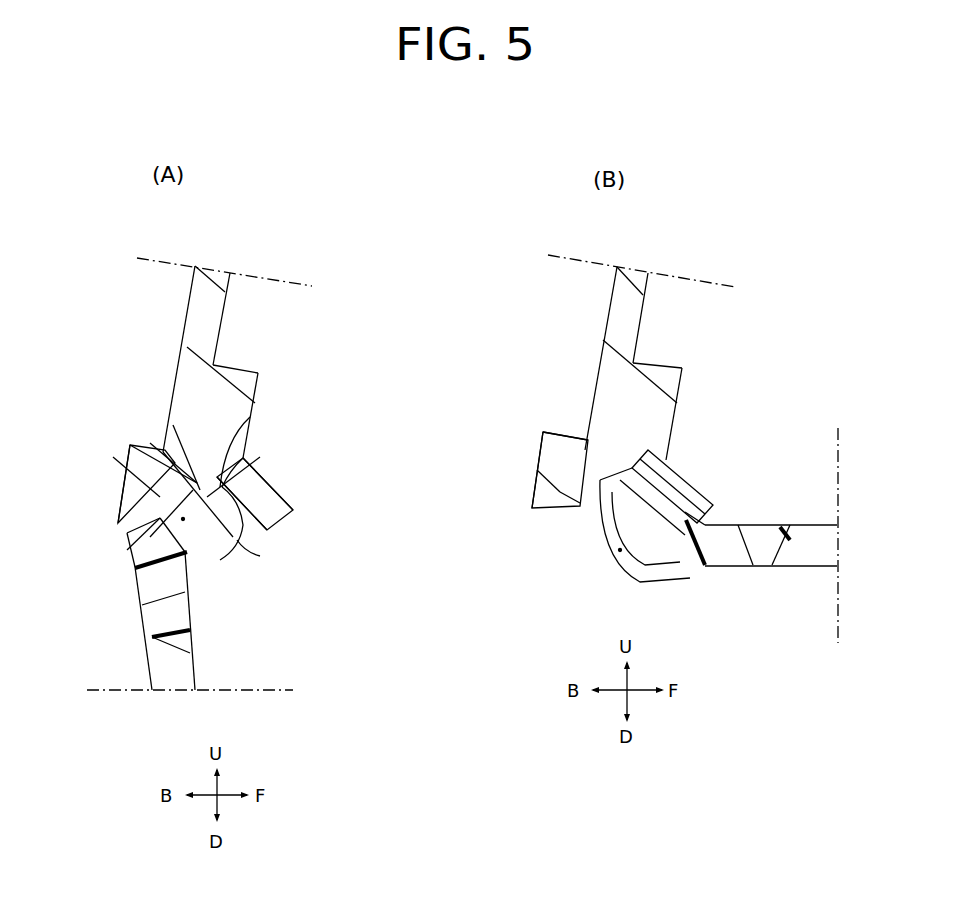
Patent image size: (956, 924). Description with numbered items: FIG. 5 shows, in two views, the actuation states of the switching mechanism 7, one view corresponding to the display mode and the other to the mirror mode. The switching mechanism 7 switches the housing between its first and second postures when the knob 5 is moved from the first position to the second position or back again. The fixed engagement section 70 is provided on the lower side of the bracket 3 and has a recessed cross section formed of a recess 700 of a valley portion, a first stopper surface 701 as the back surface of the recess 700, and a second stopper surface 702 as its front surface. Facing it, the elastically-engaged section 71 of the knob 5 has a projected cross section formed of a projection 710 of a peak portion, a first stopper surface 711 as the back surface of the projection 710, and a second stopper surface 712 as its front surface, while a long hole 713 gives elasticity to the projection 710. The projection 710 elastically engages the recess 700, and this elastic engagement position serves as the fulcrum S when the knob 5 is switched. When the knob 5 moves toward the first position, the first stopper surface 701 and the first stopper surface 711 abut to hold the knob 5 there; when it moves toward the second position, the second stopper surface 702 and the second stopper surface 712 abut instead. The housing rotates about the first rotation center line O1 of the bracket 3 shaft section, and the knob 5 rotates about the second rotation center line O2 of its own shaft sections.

The bracket 3 is at (226, 316).
The knob 5 is at (198, 662).
The switching mechanism 7 is at (436, 489).
The fixed engagement section 70 is at (436, 441).
The recess 700 is at (263, 480).
The first stopper surface 701 is at (137, 467).
The second stopper surface 702 is at (247, 520).
The elastically-engaged section 71 is at (427, 498).
The projection 710 is at (555, 389).
The first stopper surface 711 is at (160, 447).
The second stopper surface 712 is at (237, 540).
The long hole 713 is at (127, 550).
The fulcrum S is at (172, 424).
The first rotation center line O1 is at (187, 530).
The second rotation center line O2 is at (618, 552).